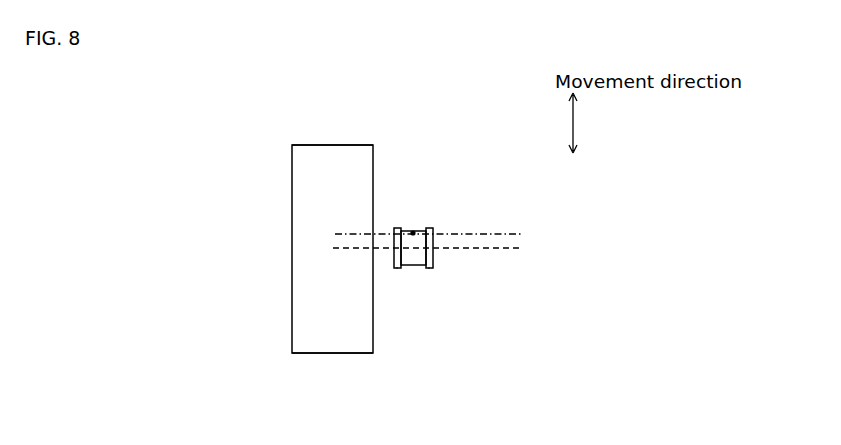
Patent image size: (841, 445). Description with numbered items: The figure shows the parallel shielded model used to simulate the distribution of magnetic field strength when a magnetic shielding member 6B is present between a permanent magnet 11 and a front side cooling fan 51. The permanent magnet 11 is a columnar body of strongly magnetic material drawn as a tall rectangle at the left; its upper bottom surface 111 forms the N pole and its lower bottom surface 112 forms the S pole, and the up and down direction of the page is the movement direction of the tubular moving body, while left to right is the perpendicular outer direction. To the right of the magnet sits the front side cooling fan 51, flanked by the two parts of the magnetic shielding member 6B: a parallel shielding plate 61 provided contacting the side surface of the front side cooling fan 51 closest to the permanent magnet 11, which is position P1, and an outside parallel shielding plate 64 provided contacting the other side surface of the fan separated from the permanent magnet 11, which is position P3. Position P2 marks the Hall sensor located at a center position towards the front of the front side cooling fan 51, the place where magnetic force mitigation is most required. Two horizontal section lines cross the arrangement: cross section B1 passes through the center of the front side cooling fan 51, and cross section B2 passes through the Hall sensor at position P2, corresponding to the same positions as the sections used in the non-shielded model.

The permanent magnet 11 is at (310, 292).
The upper bottom surface 111 is at (332, 144).
The lower bottom surface 112 is at (325, 354).
The magnetic shielding member 6B is at (449, 254).
The parallel shielding plate 61 is at (394, 228).
The front side cooling fan 51 is at (411, 257).
The outside parallel shielding plate 64 is at (432, 228).
The position P1 is at (397, 268).
The position P2 is at (413, 230).
The position P3 is at (429, 268).
The cross section B1 is at (446, 252).
The cross section B2 is at (447, 232).